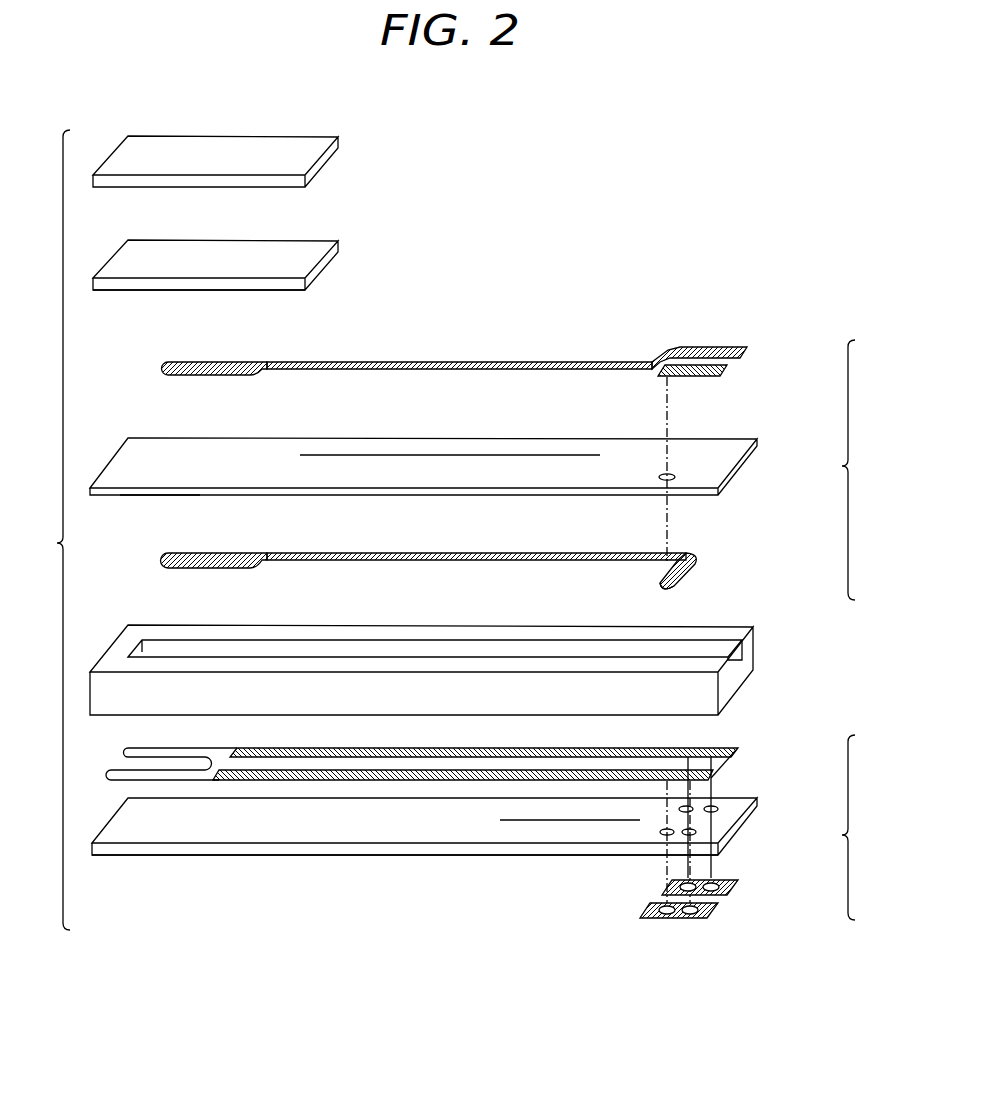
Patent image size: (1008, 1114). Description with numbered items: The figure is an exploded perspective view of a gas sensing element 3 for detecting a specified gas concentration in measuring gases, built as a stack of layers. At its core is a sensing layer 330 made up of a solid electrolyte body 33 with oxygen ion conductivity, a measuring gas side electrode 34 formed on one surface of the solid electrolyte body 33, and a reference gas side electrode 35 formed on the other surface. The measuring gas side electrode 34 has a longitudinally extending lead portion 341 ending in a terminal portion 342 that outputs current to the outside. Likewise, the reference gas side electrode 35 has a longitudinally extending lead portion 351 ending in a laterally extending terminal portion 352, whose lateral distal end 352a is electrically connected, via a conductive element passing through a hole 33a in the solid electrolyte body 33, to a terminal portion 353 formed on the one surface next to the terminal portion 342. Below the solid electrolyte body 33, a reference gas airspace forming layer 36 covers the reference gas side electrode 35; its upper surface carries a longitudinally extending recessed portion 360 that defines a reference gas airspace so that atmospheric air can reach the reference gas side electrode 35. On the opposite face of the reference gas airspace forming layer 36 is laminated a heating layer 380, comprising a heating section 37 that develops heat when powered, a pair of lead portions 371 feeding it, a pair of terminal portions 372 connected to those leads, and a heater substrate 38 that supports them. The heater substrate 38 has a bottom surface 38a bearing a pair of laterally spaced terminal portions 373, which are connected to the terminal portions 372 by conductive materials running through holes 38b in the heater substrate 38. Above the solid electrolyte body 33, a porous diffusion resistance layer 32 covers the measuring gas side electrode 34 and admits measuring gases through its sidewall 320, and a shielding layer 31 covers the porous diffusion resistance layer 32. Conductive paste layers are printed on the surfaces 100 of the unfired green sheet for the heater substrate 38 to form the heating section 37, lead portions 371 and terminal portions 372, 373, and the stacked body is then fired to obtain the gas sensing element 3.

The gas sensing element 3 is at (53, 530).
The shielding layer 31 is at (233, 145).
The porous diffusion resistance layer 32 is at (307, 250).
The sidewall 320 is at (113, 288).
The measuring gas side electrode 34 is at (212, 367).
The lead portion 341 is at (452, 360).
The terminal portion 342 is at (713, 346).
The terminal portion 353 is at (733, 373).
The surfaces 100 is at (550, 455).
The solid electrolyte body 33 is at (700, 462).
The hole 33a is at (677, 477).
The sensing layer 330 is at (867, 470).
The reference gas side electrode 35 is at (237, 563).
The lead portion 351 is at (482, 560).
The terminal portion 352 is at (693, 560).
The lateral distal end 352a is at (675, 586).
The reference gas airspace forming layer 36 is at (725, 690).
The recessed portion 360 is at (700, 647).
The heating section 37 is at (172, 780).
The lead portions 371 is at (483, 780).
The terminal portions 372 is at (728, 753).
The heater substrate 38 is at (297, 823).
The bottom surface 38a is at (390, 855).
The holes 38b is at (697, 830).
The terminal portions 373 is at (738, 887).
The heating layer 380 is at (867, 827).